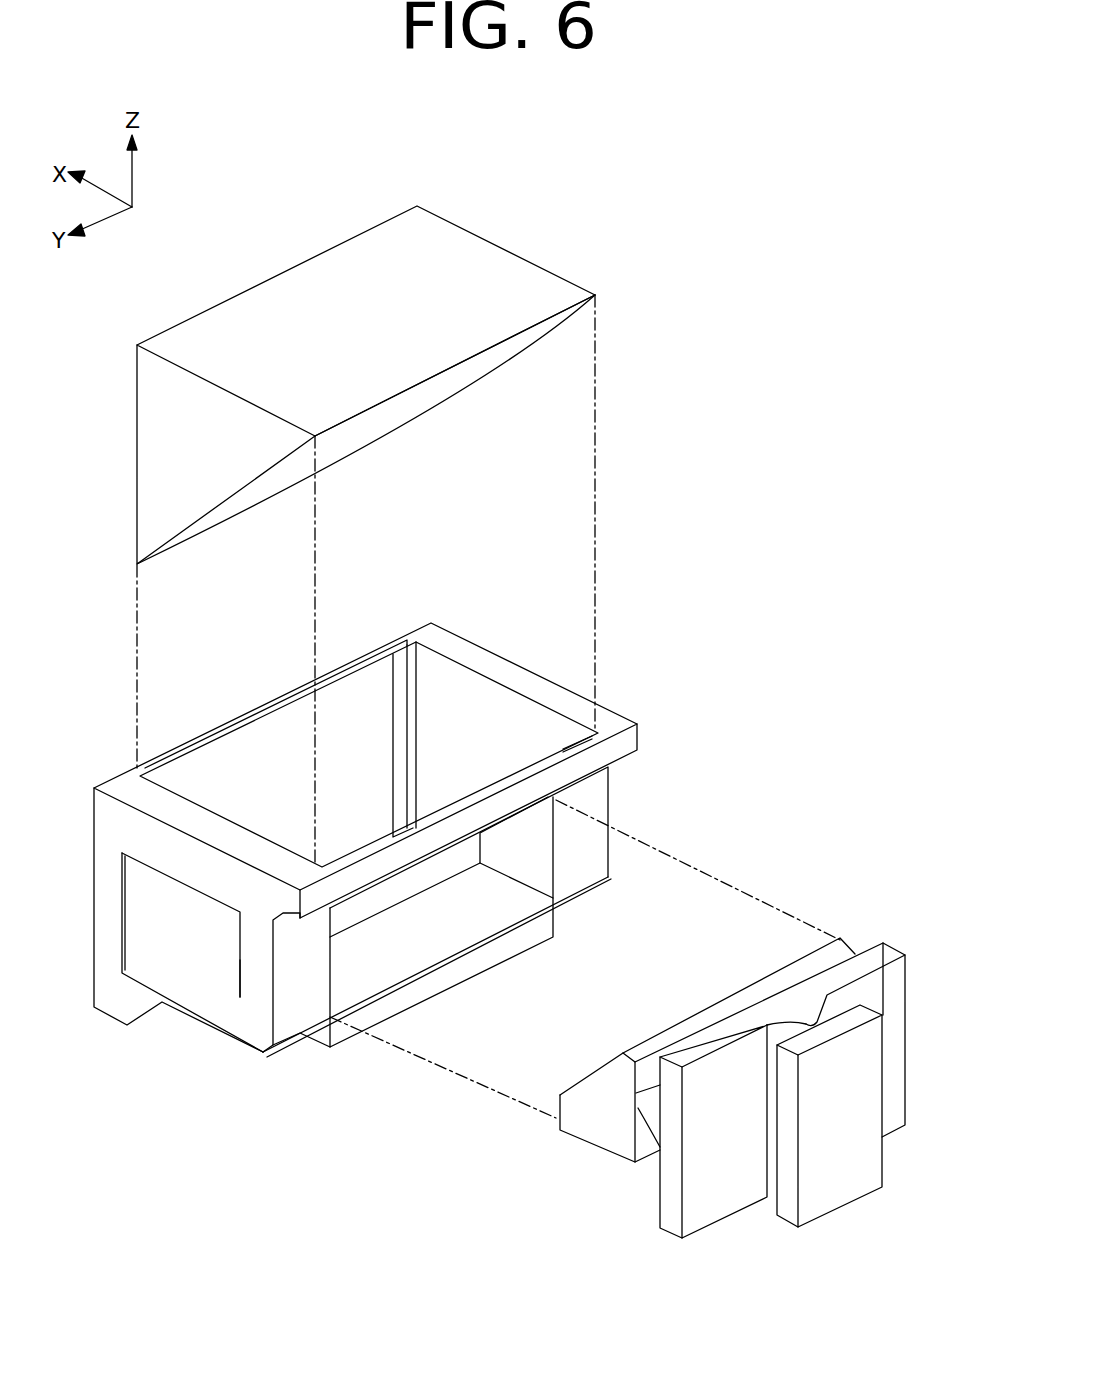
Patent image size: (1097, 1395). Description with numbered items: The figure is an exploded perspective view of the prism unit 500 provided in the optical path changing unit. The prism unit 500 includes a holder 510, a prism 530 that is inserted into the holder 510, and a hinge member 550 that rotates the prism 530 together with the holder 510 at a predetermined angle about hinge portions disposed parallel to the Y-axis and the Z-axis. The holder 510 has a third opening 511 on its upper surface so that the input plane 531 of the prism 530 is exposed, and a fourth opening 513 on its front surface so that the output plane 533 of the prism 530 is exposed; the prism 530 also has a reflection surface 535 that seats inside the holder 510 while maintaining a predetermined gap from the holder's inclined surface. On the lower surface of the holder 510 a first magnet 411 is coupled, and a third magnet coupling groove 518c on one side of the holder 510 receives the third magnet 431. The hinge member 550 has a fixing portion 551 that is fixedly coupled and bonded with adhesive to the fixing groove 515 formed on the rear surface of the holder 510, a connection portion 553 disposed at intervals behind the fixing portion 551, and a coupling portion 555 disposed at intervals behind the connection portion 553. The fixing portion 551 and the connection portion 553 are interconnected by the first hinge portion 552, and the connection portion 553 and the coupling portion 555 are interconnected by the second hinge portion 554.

The prism unit 500 is at (517, 127).
The prism 530 is at (577, 270).
The input plane 531 is at (440, 242).
The output plane 533 is at (137, 456).
The reflection surface 535 is at (428, 404).
The holder 510 is at (642, 738).
The third opening 511 is at (497, 688).
The fourth opening 513 is at (235, 747).
The fixing groove 515 is at (540, 860).
The third magnet coupling groove 518c is at (240, 997).
The third magnet 431 is at (177, 985).
The first magnet 411 is at (345, 1033).
The hinge member 550 is at (885, 926).
The fixing portion 551 is at (592, 1127).
The first hinge portion 552 is at (643, 1117).
The connection portion 553 is at (713, 1203).
The second hinge portion 554 is at (817, 1022).
The coupling portion 555 is at (843, 1190).